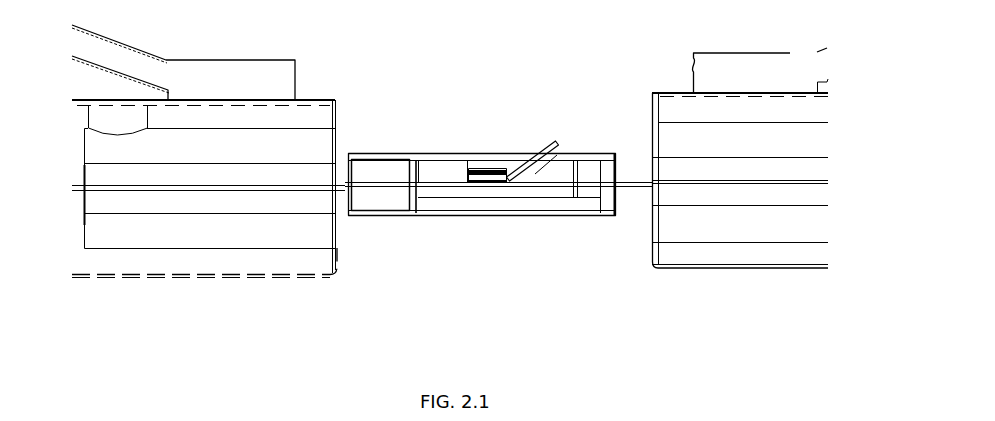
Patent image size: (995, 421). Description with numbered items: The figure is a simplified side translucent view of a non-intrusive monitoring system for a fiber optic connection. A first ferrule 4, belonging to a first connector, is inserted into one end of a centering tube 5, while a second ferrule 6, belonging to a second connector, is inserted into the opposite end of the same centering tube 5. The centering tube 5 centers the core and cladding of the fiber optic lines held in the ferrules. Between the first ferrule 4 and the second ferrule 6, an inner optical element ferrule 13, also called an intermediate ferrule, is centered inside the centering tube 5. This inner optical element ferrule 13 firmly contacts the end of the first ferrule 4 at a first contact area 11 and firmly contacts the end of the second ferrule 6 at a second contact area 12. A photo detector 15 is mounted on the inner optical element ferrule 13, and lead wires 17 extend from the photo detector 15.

The first ferrule 4 is at (373, 172).
The centering tube 5 is at (448, 155).
The second ferrule 6 is at (629, 158).
The first contact area 11 is at (416, 215).
The second contact area 12 is at (575, 200).
The inner optical element ferrule 13 is at (533, 200).
The photo detector 15 is at (482, 172).
The lead wires 17 is at (553, 138).